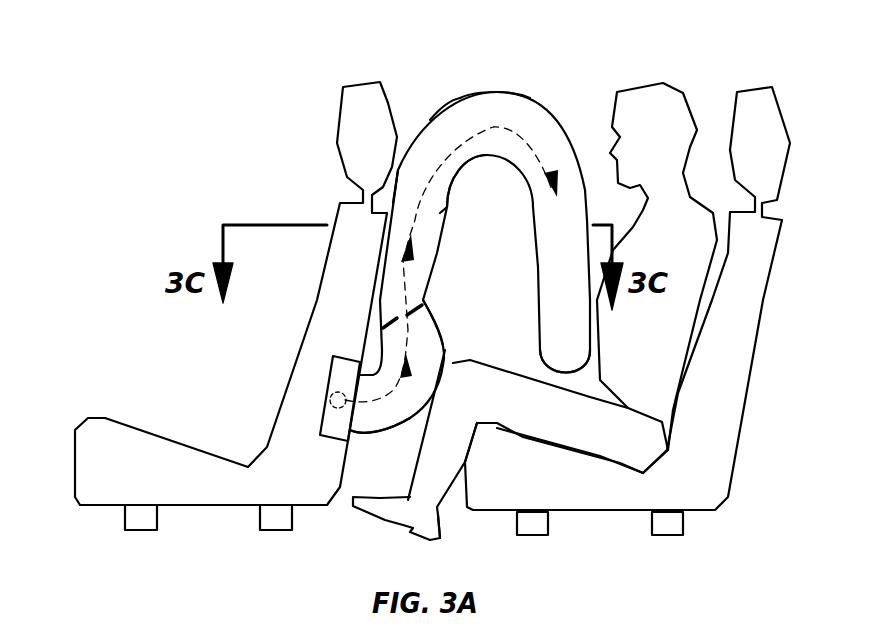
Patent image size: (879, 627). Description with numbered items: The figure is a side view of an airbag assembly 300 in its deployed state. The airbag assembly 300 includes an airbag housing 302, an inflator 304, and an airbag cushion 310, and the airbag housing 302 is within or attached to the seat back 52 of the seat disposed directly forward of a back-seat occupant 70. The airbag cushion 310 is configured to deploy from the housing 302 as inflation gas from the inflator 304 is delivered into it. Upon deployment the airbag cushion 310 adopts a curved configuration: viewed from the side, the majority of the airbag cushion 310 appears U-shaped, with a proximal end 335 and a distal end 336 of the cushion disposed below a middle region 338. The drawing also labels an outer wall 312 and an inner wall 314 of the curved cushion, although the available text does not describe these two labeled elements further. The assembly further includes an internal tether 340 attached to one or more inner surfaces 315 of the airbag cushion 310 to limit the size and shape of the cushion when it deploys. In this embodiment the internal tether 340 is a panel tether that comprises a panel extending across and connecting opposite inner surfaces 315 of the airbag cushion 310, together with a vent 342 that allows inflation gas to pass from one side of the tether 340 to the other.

The seat back 52 is at (361, 296).
The back-seat occupant 70 is at (683, 247).
The airbag assembly 300 is at (557, 87).
The airbag housing 302 is at (333, 358).
The inflator 304 is at (330, 400).
The airbag cushion 310 is at (481, 81).
The outer panel 312 is at (449, 103).
The inner panel 314 is at (462, 163).
The inner surfaces 315 is at (393, 203).
The proximal end 335 is at (367, 442).
The distal end 336 is at (537, 358).
The middle region 338 is at (507, 90).
The internal tether 340 is at (415, 327).
The vent 342 is at (408, 300).